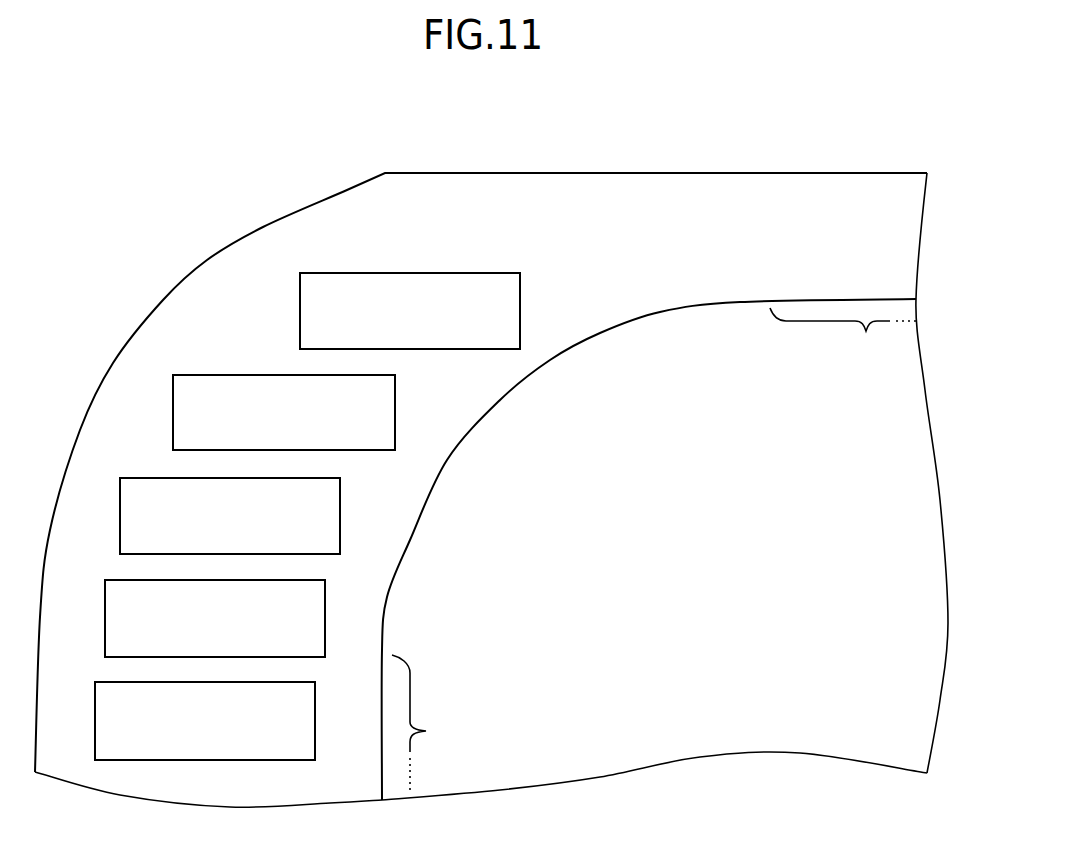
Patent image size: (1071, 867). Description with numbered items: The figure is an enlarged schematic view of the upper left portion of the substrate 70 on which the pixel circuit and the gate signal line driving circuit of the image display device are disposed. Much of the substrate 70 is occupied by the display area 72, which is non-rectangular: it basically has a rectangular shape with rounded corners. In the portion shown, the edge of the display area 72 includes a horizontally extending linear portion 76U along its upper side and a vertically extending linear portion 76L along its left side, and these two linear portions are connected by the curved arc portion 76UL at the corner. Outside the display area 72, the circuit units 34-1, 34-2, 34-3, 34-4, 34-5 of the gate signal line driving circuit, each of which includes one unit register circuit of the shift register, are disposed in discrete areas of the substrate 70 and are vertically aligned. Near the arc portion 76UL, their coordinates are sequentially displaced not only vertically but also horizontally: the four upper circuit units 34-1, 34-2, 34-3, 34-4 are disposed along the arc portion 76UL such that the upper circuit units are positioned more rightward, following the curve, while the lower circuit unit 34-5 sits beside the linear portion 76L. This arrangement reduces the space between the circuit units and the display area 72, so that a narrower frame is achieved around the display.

The substrate 70 is at (734, 173).
The display area 72 is at (780, 576).
The circuit unit 34-1 is at (520, 308).
The circuit unit 34-2 is at (395, 410).
The circuit unit 34-3 is at (340, 508).
The circuit unit 34-4 is at (325, 613).
The circuit unit 34-5 is at (315, 716).
The linear portion 76U is at (843, 337).
The arc portion 76UL is at (447, 462).
The linear portion 76L is at (432, 723).